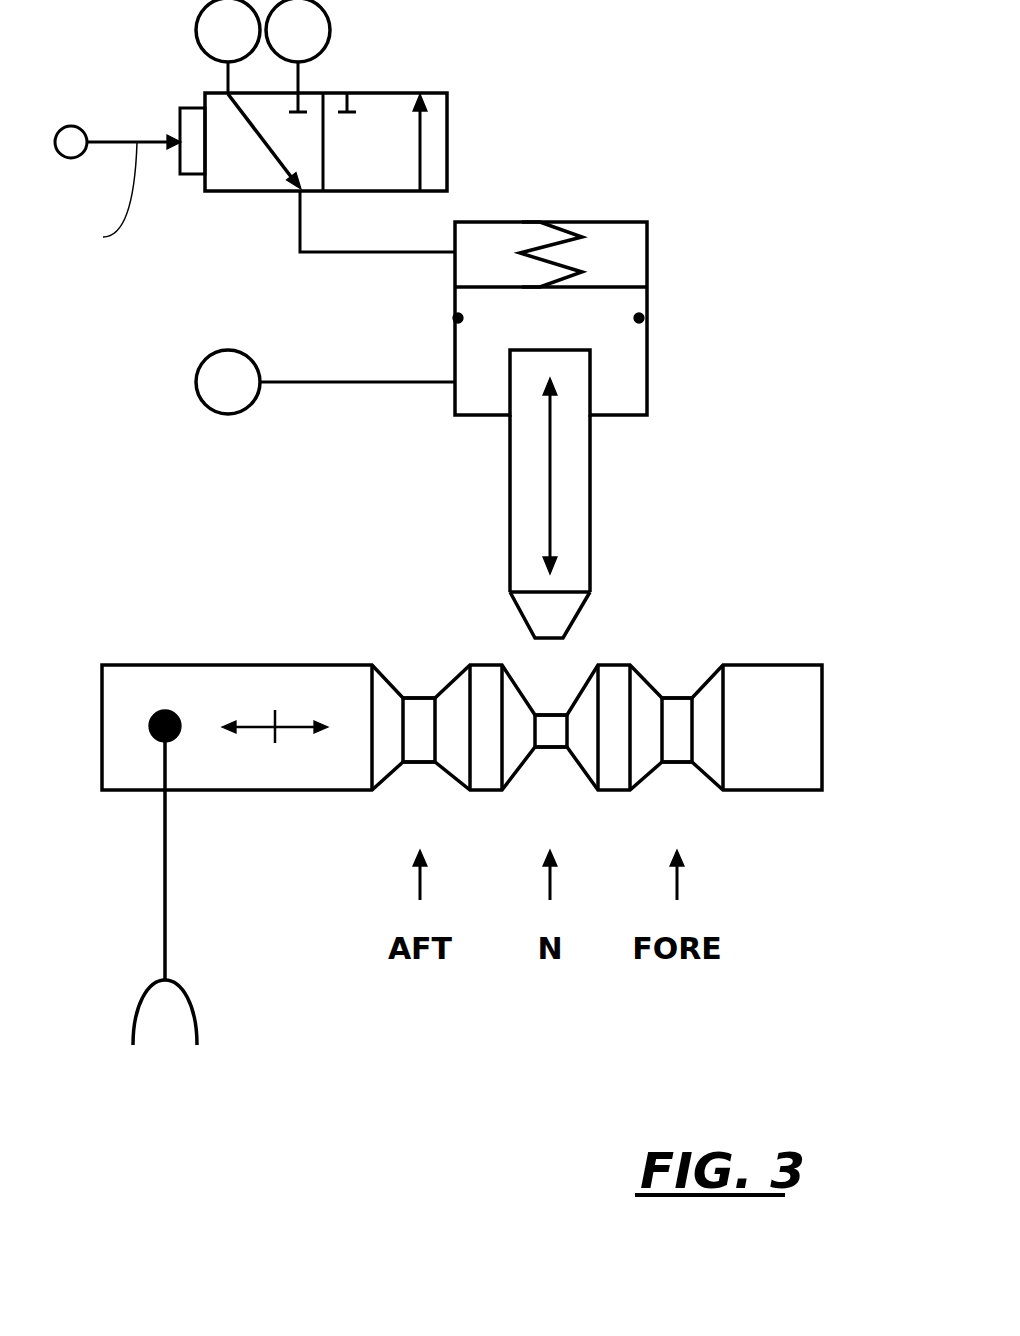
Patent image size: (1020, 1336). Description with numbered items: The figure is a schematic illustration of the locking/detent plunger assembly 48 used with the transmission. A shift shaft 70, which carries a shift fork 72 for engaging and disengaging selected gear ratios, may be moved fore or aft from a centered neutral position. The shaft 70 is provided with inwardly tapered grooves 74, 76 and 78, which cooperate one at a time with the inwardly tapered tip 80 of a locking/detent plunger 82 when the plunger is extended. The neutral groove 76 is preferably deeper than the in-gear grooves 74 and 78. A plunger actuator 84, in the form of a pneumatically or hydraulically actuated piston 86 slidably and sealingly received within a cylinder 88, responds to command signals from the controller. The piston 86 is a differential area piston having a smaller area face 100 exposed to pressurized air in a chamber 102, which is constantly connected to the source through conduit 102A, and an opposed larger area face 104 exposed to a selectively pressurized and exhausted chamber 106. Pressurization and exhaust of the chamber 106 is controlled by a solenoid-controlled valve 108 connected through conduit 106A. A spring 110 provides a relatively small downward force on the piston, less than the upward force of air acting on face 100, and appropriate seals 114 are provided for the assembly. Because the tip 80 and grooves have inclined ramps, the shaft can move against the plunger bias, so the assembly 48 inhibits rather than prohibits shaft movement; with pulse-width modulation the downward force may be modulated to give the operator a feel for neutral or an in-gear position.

The locking/detent plunger assembly 48 is at (757, 170).
The shift shaft 70 is at (773, 688).
The shift fork 72 is at (163, 963).
The in-gear groove 74 is at (677, 773).
The neutral groove 76 is at (550, 773).
The in-gear groove 78 is at (420, 773).
The inwardly tapered tip 80 is at (558, 618).
The locking/detent plunger 82 is at (572, 500).
The plunger actuator 84 is at (534, 155).
The piston 86 is at (615, 320).
The cylinder 88 is at (640, 370).
The smaller area face 100 is at (630, 352).
The chamber 102 is at (477, 382).
The conduit 102A is at (355, 385).
The larger area face 104 is at (470, 283).
The chamber 106 is at (615, 237).
The conduit 106A is at (373, 257).
The solenoid-controlled valve 108 is at (368, 77).
The spring 110 is at (588, 253).
The seals 114 is at (455, 321).